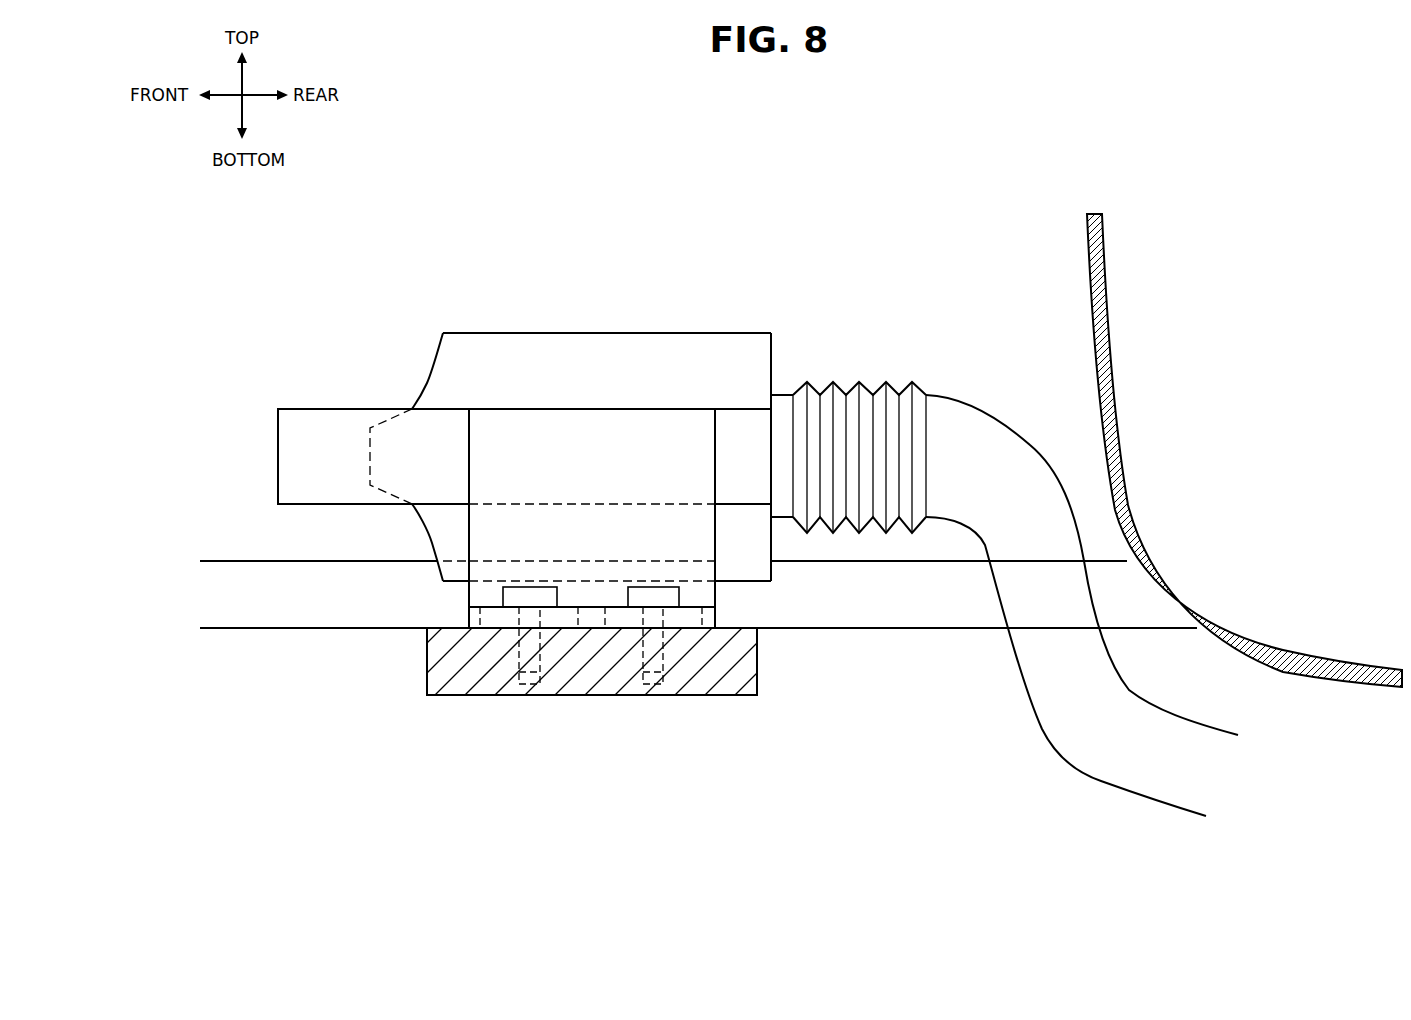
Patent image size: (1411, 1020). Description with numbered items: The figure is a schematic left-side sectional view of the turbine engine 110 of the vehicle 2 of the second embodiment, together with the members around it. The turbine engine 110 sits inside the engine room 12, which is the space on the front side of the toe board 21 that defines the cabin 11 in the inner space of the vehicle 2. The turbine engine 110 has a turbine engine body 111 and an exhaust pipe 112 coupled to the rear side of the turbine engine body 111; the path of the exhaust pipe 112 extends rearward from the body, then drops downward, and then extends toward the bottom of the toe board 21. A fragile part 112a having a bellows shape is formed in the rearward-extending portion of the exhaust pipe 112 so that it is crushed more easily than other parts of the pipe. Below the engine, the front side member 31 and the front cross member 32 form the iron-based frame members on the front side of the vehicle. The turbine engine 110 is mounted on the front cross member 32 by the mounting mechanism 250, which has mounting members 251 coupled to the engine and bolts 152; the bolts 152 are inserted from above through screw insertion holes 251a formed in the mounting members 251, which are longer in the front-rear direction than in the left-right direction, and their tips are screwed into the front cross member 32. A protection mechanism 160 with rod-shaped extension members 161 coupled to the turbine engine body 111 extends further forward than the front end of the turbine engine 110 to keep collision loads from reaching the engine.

The vehicle 2 is at (395, 160).
The cabin 11 is at (1228, 235).
The engine room 12 is at (598, 228).
The toe board 21 is at (1107, 285).
The front side member 31 is at (288, 630).
The front cross member 32 is at (438, 697).
The turbine engine 110 is at (480, 290).
The turbine engine body 111 is at (430, 352).
The exhaust pipe 112 is at (933, 390).
The fragile part 112a is at (852, 390).
The bolt 152 is at (518, 587).
The protection mechanism 160 is at (361, 386).
The extension member 161 is at (300, 408).
The mounting mechanism 250 is at (658, 676).
The mounting member 251 is at (721, 594).
The screw insertion hole 251a is at (480, 618).